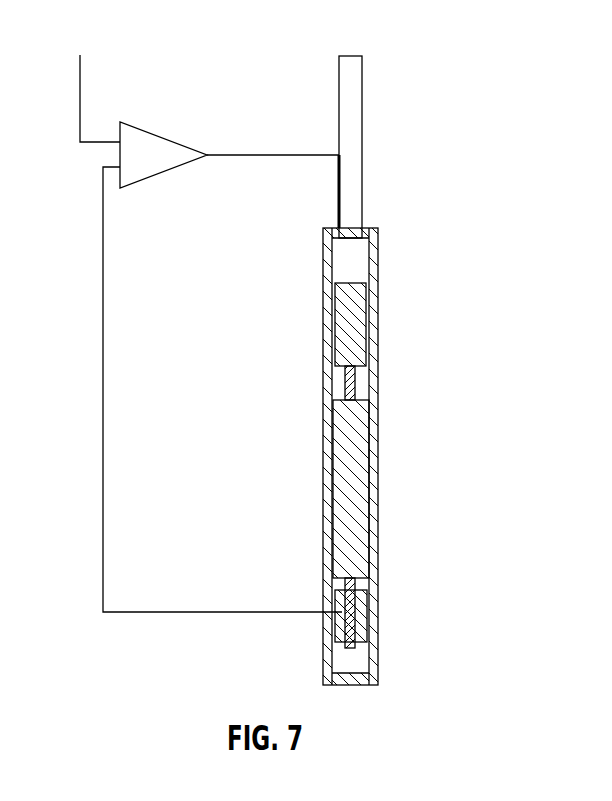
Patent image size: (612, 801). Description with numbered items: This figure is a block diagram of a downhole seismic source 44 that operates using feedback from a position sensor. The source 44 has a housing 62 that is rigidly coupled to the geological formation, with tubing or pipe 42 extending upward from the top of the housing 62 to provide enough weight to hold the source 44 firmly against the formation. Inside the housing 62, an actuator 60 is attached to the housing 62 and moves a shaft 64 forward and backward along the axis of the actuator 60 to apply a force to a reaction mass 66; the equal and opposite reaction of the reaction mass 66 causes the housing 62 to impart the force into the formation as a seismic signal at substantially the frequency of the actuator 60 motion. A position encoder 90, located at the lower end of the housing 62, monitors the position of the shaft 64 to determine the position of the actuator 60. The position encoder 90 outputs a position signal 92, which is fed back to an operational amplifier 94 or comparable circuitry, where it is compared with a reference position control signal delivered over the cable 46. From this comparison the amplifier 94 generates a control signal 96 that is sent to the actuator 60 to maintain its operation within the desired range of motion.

The tubing or pipe 42 is at (362, 133).
The downhole seismic source 44 is at (323, 425).
The cable 46 is at (80, 91).
The actuator 60 is at (360, 475).
The housing 62 is at (378, 278).
The shaft 64 is at (355, 392).
The reaction mass 66 is at (360, 335).
The position encoder 90 is at (367, 610).
The position signal 92 is at (103, 390).
The operational amplifier 94 is at (153, 177).
The control signal 96 is at (274, 155).